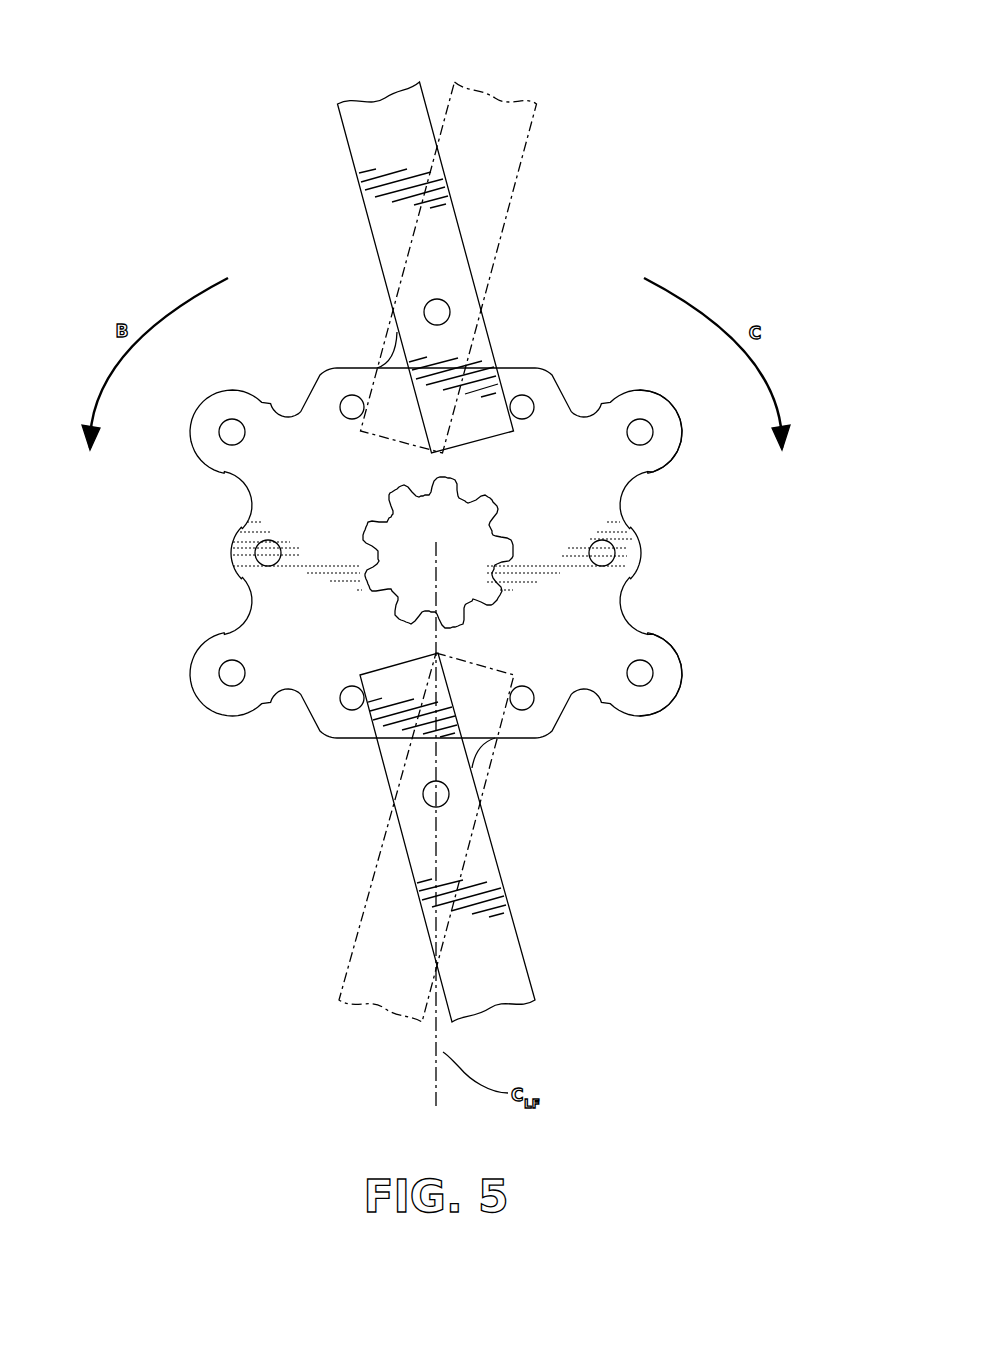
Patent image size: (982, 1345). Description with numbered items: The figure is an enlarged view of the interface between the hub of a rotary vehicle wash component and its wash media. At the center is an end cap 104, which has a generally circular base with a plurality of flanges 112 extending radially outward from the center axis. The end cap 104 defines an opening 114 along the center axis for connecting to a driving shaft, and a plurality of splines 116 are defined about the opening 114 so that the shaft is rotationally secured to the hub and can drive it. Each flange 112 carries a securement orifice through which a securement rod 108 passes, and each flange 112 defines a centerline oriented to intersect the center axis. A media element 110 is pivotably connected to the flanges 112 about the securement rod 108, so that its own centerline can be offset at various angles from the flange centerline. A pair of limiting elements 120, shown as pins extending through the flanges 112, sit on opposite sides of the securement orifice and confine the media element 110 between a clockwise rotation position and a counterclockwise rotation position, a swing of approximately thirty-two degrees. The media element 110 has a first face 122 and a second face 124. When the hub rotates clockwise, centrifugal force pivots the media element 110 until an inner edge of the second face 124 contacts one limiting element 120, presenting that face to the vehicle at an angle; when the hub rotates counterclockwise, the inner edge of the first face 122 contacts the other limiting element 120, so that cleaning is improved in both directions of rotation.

The end cap 104 is at (552, 430).
The securement rod 108 is at (639, 443).
The media element 110 is at (440, 513).
The flange 112 is at (660, 442).
The opening 114 is at (423, 533).
The spline 116 is at (489, 496).
The limiting element 120 is at (343, 698).
The first face 122 is at (372, 230).
The second face 124 is at (485, 323).